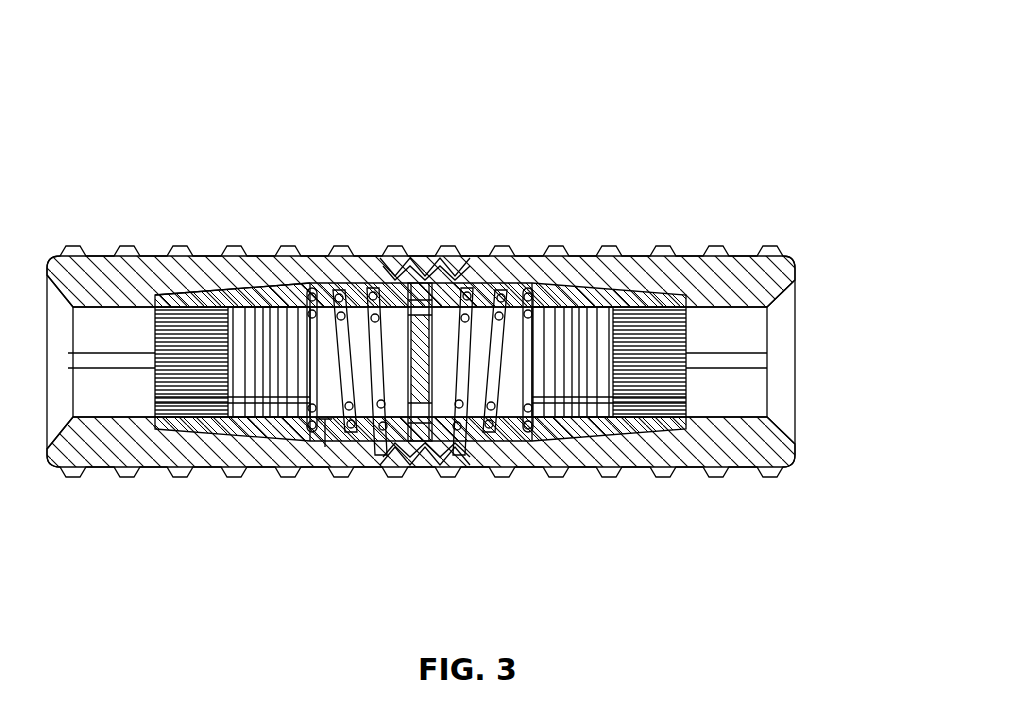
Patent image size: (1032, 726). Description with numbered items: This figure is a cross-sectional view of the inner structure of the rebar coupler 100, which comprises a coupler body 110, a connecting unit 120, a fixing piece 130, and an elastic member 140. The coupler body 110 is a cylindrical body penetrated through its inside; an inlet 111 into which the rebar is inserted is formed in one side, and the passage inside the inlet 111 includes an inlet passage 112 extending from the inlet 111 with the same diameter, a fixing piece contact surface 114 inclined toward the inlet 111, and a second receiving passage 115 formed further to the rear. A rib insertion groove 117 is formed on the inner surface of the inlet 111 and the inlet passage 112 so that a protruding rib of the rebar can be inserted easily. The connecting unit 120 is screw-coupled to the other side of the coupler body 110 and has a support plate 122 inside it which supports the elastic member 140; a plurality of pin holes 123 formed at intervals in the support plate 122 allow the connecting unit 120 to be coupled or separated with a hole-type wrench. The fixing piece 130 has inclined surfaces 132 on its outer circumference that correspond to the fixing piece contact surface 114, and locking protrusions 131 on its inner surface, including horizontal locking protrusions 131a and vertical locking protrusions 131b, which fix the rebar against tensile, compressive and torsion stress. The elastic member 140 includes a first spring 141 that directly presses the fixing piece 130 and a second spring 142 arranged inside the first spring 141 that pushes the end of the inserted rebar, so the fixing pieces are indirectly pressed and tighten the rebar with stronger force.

The rebar coupler 100 is at (475, 361).
The coupler body 110 is at (635, 255).
The inlet 111 is at (782, 315).
The inlet passage 112 is at (736, 384).
The fixing piece contact surface 114 is at (237, 290).
The second receiving passage 115 is at (325, 447).
The rib insertion groove 117 is at (770, 350).
The connecting unit 120 is at (445, 270).
The support plate 122 is at (388, 256).
The pin holes 123 is at (425, 456).
The fixing piece 130 is at (567, 282).
The locking protrusions 131 is at (671, 462).
The horizontal locking protrusions 131a is at (695, 430).
The vertical locking protrusions 131b is at (575, 438).
The inclined surfaces 132 is at (200, 293).
The elastic member 140 is at (453, 450).
The first spring 141 is at (483, 432).
The second spring 142 is at (527, 440).